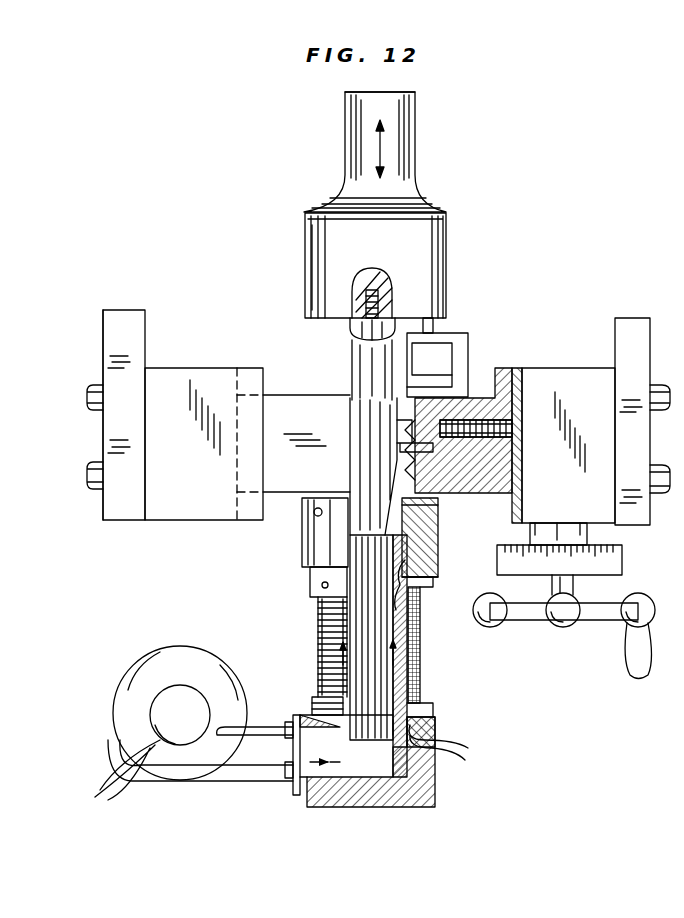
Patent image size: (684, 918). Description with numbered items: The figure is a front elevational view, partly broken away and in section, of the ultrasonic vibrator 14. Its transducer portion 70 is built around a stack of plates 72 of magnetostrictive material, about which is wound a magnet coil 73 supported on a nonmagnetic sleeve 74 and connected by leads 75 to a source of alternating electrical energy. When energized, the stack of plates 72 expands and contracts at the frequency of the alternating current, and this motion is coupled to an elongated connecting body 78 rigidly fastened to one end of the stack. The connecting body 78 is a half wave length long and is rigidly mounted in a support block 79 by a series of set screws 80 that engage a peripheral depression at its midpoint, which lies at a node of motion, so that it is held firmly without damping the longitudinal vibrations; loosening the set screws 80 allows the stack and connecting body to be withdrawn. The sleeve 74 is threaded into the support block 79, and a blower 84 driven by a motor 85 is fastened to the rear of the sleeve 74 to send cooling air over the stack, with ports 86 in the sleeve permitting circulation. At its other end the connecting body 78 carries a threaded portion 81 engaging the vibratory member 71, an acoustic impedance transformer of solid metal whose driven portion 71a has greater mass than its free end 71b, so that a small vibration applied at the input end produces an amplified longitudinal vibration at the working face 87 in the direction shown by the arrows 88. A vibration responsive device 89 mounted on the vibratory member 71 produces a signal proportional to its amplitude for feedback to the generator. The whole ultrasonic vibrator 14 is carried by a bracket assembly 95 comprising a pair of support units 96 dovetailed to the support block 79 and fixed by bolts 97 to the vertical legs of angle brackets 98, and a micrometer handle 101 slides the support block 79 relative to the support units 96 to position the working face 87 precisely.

The ultrasonic vibrator 14 is at (424, 191).
The transducer portion 70 is at (316, 646).
The vibratory member 71 is at (452, 268).
The input end portion 71a is at (322, 276).
The free end 71b is at (346, 146).
The stack of plates 72 is at (378, 683).
The magnet coil 73 is at (420, 652).
The nonmagnetic sleeve 74 is at (432, 790).
The leads 75 is at (466, 745).
The connecting body 78 is at (354, 366).
The support block 79 is at (283, 497).
The set screws 80 is at (470, 420).
The threaded portion 81 is at (370, 305).
The blower 84 is at (118, 692).
The motor 85 is at (160, 718).
The ports 86 is at (410, 535).
The working face 87 is at (365, 92).
The arrows 88 is at (385, 148).
The vibration responsive device 89 is at (440, 355).
The bracket assembly 95 is at (100, 352).
The support units 96 is at (583, 370).
The bolts 97 is at (92, 468).
The angle brackets 98 is at (630, 326).
The micrometer handle 101 is at (626, 622).